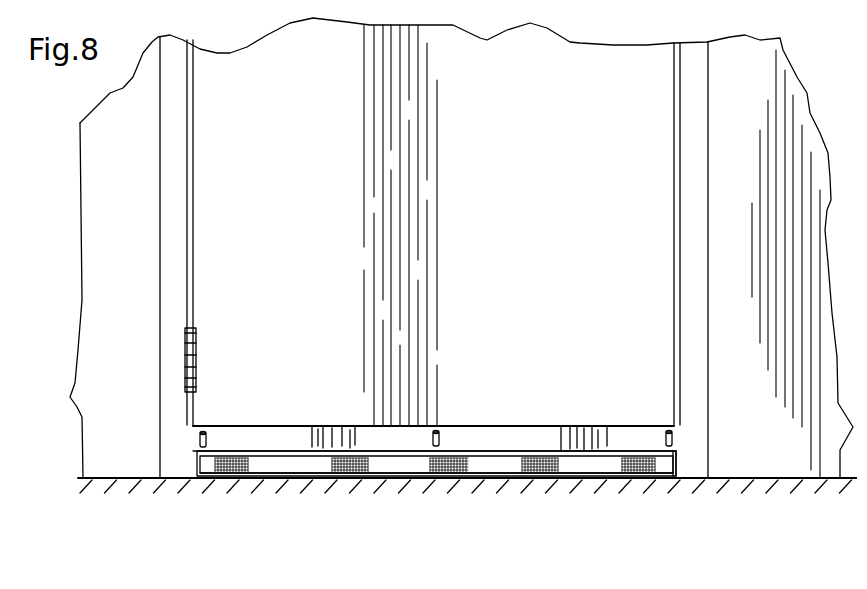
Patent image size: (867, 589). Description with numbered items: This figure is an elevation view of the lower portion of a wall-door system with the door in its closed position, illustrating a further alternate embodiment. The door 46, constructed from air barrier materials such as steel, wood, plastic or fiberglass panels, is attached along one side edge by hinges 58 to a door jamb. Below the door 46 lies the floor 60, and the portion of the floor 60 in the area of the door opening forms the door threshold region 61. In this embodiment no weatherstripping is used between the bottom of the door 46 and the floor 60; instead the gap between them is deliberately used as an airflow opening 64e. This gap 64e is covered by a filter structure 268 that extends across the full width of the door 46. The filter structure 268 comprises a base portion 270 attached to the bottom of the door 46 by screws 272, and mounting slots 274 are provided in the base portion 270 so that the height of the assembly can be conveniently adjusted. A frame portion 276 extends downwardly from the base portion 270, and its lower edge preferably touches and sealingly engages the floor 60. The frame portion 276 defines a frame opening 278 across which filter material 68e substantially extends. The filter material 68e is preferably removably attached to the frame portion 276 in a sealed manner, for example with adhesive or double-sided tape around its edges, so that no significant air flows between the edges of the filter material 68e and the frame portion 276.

The door 46 is at (602, 221).
The hinges 58 is at (187, 370).
The floor 60 is at (762, 476).
The door threshold region 61 is at (393, 479).
The airflow opening 64e is at (692, 466).
The filter material 68e is at (277, 463).
The filter structure 268 is at (513, 486).
The base portion 270 is at (320, 444).
The screws 272 is at (205, 431).
The mounting slots 274 is at (207, 441).
The frame portion 276 is at (610, 474).
The frame opening 278 is at (463, 473).